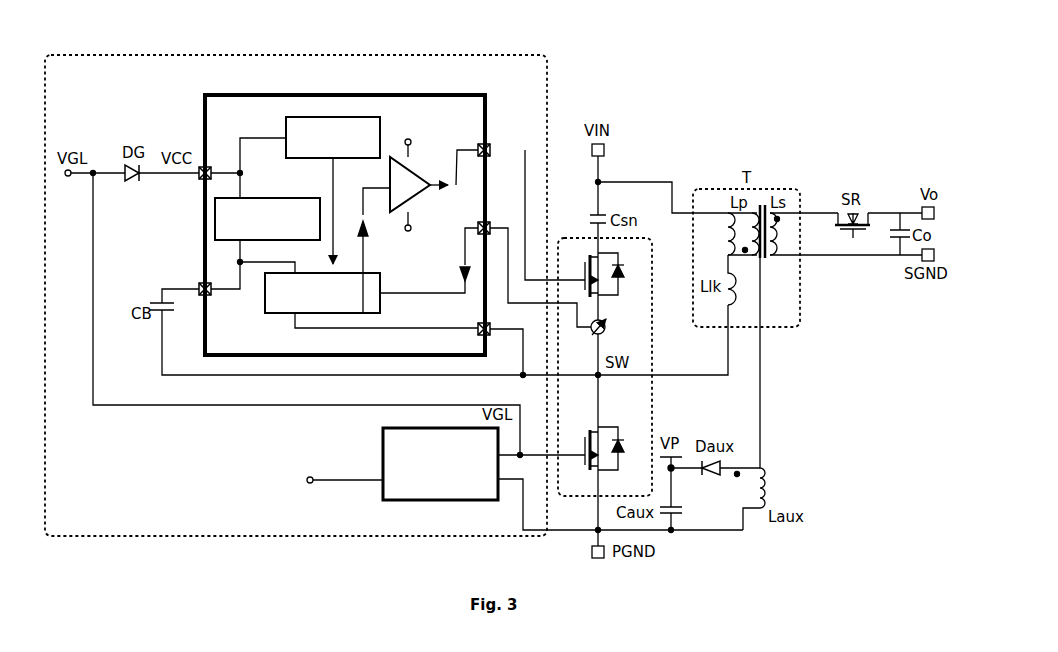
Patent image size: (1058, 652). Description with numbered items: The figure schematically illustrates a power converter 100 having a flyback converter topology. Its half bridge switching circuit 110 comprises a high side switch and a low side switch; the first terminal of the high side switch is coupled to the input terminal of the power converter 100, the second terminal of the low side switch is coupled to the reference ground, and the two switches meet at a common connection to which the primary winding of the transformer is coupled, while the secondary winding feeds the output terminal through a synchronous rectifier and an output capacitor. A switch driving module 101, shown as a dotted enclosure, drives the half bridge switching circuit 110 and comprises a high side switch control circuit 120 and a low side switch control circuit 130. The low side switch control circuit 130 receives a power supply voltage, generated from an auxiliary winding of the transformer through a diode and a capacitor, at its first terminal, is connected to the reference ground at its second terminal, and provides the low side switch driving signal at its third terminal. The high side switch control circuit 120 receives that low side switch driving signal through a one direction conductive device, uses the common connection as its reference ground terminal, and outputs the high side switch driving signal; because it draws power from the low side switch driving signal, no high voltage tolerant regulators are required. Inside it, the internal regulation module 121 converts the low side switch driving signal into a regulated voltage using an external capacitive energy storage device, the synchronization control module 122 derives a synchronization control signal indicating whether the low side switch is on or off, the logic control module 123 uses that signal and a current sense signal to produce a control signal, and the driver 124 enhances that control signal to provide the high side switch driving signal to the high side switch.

The power converter 100 is at (730, 43).
The switch driving module 101 is at (108, 56).
The half bridge switching circuit 110 is at (652, 340).
The high side switch control circuit 120 is at (350, 92).
The internal regulation module 121 is at (265, 198).
The synchronization control module 122 is at (380, 125).
The logic control module 123 is at (381, 284).
The driver 124 is at (414, 200).
The low side switch control circuit 130 is at (427, 500).